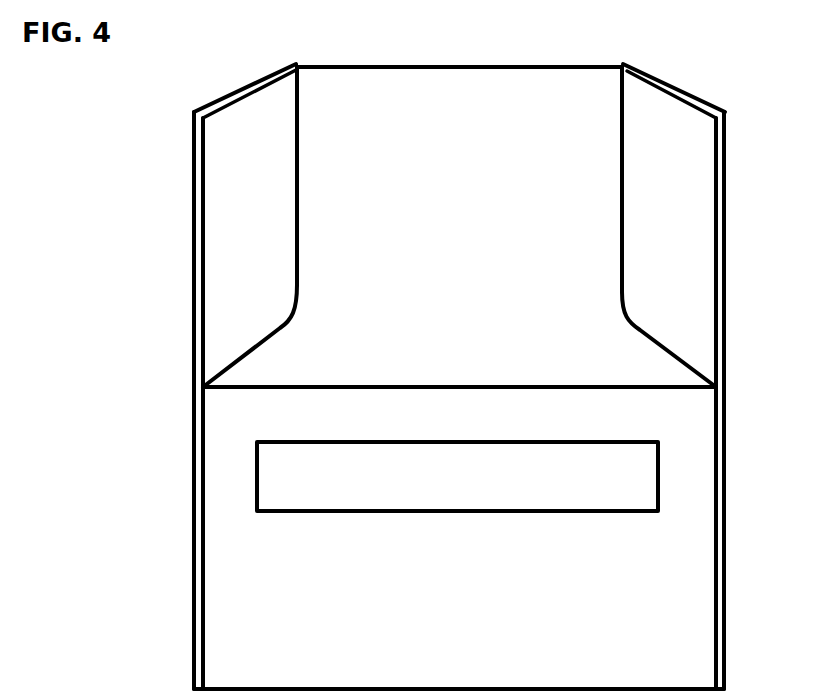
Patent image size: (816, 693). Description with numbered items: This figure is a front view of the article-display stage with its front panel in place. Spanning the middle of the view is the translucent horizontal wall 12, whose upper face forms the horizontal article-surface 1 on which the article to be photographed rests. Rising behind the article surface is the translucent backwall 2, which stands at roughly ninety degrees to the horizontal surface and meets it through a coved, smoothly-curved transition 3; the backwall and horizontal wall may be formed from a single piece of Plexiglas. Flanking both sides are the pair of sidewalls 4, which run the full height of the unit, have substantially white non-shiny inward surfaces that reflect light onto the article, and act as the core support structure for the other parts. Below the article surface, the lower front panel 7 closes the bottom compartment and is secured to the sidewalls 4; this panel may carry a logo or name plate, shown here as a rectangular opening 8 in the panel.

The horizontal article-surface 1 is at (457, 358).
The backwall 2 is at (414, 180).
The coved or smoothly-curved transition 3 is at (319, 298).
The sidewalls 4 is at (238, 198).
The lower front panel 7 is at (266, 588).
The slot 8 is at (264, 487).
The horizontal wall 12 is at (537, 352).